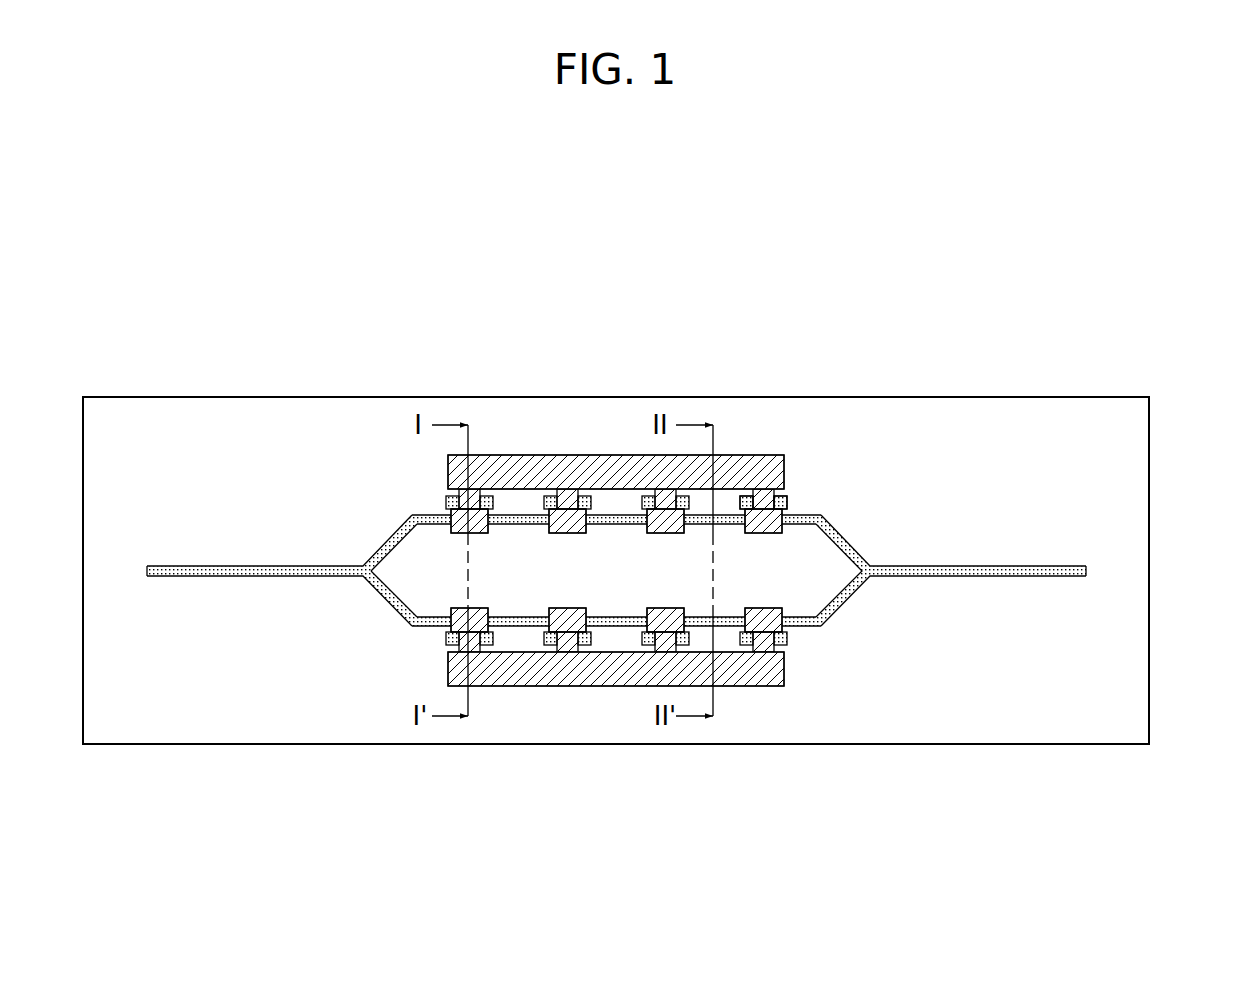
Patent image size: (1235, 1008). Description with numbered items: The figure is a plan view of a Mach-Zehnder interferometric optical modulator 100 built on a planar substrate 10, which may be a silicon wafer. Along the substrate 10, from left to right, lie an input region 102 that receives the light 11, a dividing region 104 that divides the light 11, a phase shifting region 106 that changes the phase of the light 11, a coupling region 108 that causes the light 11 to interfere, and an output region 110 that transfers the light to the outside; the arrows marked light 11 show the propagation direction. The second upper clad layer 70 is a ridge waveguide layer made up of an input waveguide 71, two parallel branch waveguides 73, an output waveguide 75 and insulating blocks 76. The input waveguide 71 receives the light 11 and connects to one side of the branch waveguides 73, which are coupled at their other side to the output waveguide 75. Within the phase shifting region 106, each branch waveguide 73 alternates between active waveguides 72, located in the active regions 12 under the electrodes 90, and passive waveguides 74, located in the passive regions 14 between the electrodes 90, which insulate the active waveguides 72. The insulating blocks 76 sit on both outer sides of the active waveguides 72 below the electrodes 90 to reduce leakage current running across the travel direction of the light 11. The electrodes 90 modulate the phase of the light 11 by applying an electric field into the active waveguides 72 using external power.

The Mach-Zehnder interferometric optical modulator 100 is at (1037, 293).
The substrate 10 is at (1134, 433).
The light 11 is at (266, 536).
The second upper clad layer 70 is at (273, 297).
The input waveguide 71 is at (323, 564).
The branch waveguides 73 is at (367, 345).
The active waveguides 72 is at (460, 511).
The passive waveguides 74 is at (513, 519).
The output waveguide 75 is at (918, 562).
The insulating blocks 76 is at (749, 503).
The electrodes 90 is at (772, 669).
The active regions 12 is at (451, 788).
The passive regions 14 is at (488, 788).
The input region 102 is at (147, 576).
The dividing region 104 is at (412, 626).
The phase shifting region 106 is at (821, 626).
The coupling region 108 is at (870, 576).
The output region 110 is at (1086, 576).